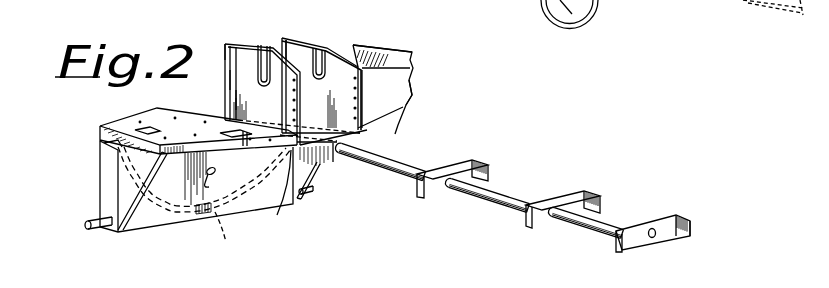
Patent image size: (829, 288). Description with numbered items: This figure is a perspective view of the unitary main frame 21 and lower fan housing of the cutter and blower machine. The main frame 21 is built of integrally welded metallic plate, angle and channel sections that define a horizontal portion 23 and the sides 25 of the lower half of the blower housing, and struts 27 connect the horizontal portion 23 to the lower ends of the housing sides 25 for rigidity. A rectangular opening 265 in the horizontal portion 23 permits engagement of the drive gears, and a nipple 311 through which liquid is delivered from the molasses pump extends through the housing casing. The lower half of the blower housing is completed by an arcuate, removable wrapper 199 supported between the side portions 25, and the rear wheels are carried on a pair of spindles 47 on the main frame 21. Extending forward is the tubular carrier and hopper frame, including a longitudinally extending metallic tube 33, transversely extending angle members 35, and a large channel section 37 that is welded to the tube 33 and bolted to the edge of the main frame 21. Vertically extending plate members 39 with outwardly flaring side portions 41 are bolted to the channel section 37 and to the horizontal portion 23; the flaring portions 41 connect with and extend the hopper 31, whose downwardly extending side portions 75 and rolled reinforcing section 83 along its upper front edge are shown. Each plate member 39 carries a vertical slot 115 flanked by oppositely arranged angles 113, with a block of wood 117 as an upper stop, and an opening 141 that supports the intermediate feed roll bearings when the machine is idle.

The main frame 21 is at (160, 112).
The horizontal portion 23 is at (173, 128).
The sides of the lower half of the blower housing 25 is at (181, 194).
The struts 27 is at (135, 199).
The hopper 31 is at (400, 62).
The tube 33 is at (503, 193).
The angle members 35 is at (417, 197).
The channel section 37 is at (277, 213).
The plate members 39 is at (243, 49).
The outwardly flaring side portions 41 is at (288, 111).
The spindles 47 is at (88, 221).
The downwardly extending side portions 75 is at (410, 92).
The rolled reinforcing section 83 is at (393, 43).
The angles 113 is at (232, 101).
The vertical slots 115 is at (232, 80).
The block of wood 117 is at (237, 52).
The openings 141 is at (265, 57).
The wrapper 199 is at (234, 231).
The rectangular opening 265 is at (118, 148).
The nipple 311 is at (216, 181).